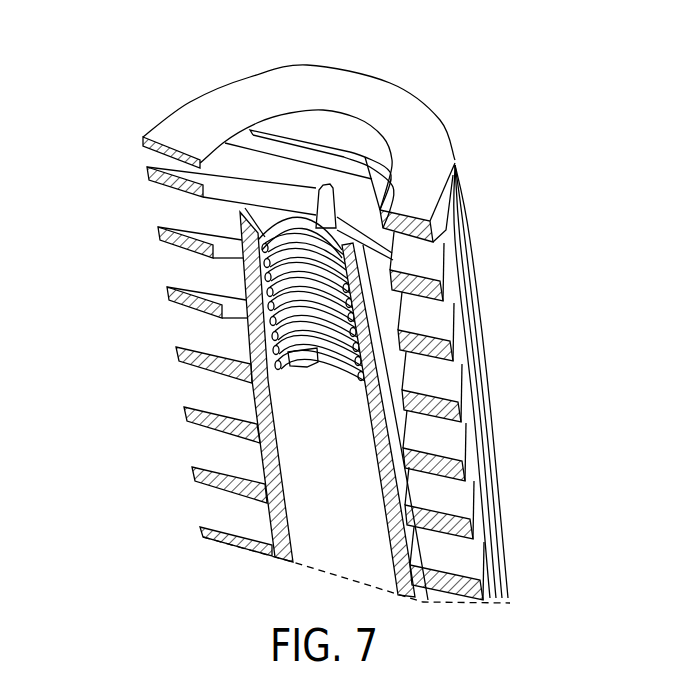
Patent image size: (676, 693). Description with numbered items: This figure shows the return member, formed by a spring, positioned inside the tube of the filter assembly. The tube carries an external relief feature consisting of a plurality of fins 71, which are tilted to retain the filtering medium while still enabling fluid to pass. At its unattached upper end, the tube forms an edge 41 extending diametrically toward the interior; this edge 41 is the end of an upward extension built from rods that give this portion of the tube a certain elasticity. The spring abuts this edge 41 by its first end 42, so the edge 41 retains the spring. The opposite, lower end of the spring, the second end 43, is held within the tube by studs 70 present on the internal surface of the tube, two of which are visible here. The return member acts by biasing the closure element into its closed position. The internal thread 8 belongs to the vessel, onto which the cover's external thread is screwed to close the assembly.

The internal thread 8 is at (390, 425).
The edge 41 is at (331, 194).
The first end 42 is at (240, 213).
The second end 43 is at (266, 362).
The studs 70 is at (305, 367).
The fins 71 is at (451, 267).